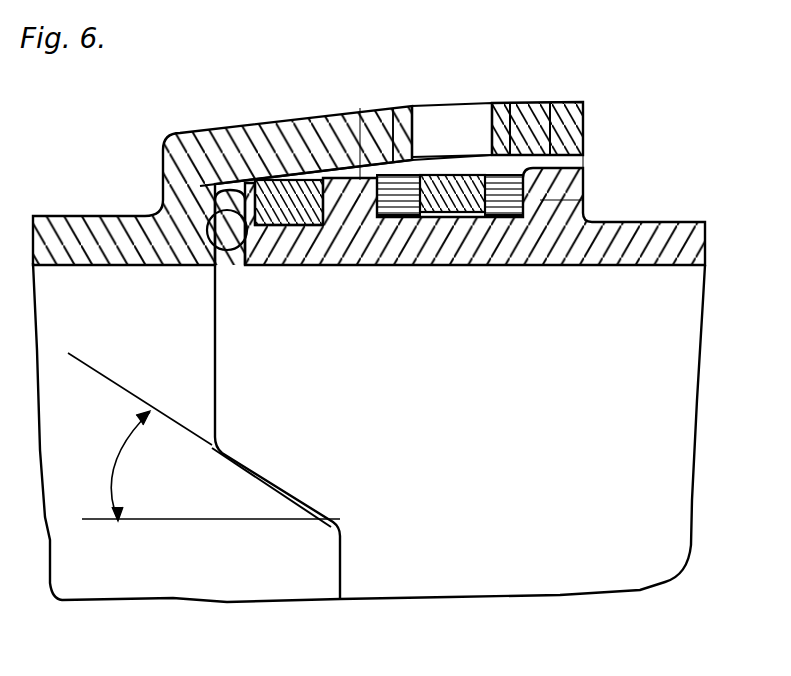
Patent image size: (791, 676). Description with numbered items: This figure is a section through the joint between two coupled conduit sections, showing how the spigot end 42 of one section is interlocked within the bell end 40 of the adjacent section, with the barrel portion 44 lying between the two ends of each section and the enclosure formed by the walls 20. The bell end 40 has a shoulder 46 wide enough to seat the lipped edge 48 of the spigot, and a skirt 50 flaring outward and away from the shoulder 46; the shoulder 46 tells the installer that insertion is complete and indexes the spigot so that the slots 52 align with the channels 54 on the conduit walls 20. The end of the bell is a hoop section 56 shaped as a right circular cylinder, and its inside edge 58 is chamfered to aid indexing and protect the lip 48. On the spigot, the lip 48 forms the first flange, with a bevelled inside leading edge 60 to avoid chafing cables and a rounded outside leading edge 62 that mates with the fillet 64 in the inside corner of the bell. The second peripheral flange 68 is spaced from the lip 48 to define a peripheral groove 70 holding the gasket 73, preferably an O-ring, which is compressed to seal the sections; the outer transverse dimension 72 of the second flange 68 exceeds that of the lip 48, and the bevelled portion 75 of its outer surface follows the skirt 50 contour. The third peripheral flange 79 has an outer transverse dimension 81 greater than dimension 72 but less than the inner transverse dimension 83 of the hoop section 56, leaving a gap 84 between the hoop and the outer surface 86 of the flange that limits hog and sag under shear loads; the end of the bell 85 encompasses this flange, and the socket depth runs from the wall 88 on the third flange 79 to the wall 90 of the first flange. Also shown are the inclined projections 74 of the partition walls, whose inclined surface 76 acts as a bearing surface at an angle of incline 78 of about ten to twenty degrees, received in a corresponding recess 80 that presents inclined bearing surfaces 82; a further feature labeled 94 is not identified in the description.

The walls 20 is at (683, 222).
The bell end 40 is at (78, 145).
The spigot end 42 is at (387, 318).
The barrel portion 44 is at (663, 323).
The shoulder 46 is at (162, 208).
The lipped edge 48 is at (216, 266).
The skirt 50 is at (298, 118).
The slots 52 is at (430, 113).
The channels 54 is at (470, 248).
The hoop section 56 is at (536, 104).
The inside edge of the bell 58 is at (583, 152).
The inside leading edge of the lip 60 is at (225, 250).
The outside leading edge of the lip 62 is at (255, 165).
The fillet 64 is at (202, 135).
The second peripheral flange 68 is at (345, 230).
The peripheral groove 70 is at (320, 178).
The outer transverse dimension of the second flange 72 is at (394, 125).
The gasket 73 is at (296, 228).
The inclined projections 74 is at (307, 587).
The bevelled portion of the second flange 75 is at (362, 180).
The inclined surface 76 is at (250, 468).
The angle of incline 78 is at (123, 452).
The third peripheral flange 79 is at (550, 205).
The recess 80 is at (277, 438).
The outer transverse dimension of the third flange 81 is at (543, 150).
The inclined bearing surfaces 82 is at (278, 478).
The inner transverse dimension of the hoop portion 83 is at (497, 152).
The gap 84 is at (590, 158).
The end of the bell 85 is at (583, 112).
The outer surface of the third flange 86 is at (500, 220).
The wall on the third flange 88 is at (583, 193).
The wall of the first flange 90 is at (240, 225).
The packing ring 94 is at (433, 187).